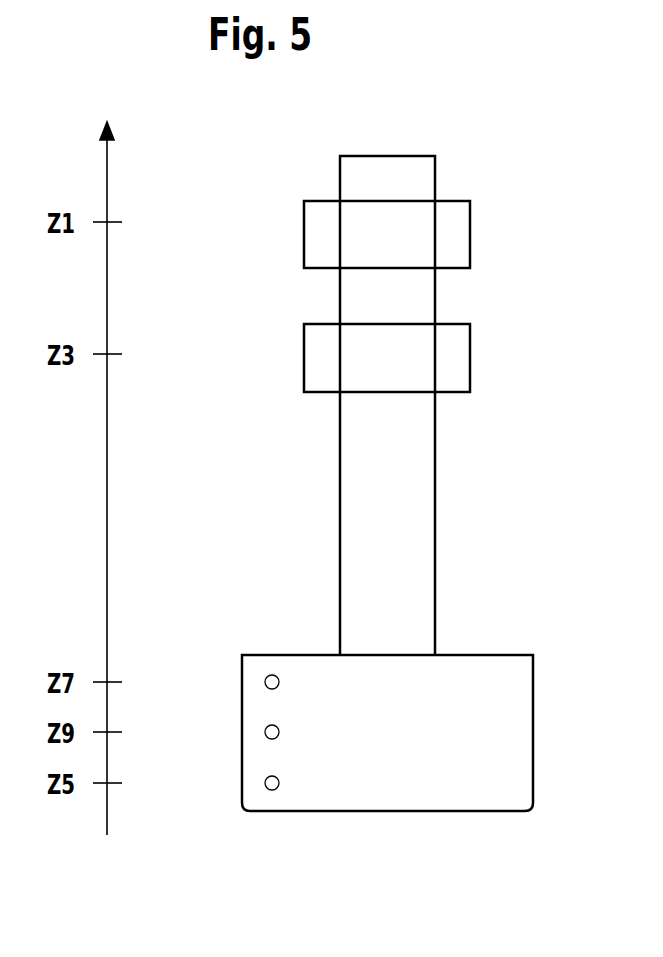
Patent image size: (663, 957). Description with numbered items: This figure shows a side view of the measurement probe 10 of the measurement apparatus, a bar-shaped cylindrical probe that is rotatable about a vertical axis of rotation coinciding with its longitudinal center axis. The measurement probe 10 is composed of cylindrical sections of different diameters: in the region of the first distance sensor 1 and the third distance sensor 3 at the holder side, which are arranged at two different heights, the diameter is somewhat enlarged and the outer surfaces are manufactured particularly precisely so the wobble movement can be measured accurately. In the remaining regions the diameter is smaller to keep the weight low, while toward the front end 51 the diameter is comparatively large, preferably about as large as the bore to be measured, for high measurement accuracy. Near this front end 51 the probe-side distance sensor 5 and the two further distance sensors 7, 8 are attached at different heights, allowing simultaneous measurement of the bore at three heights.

The first distance sensor at the holder side 1 is at (286, 222).
The third distance sensor at the holder side 3 is at (286, 354).
The distance sensor at the measurement probe side 5 is at (279, 783).
The further distance sensor at the measurement probe side 7 is at (279, 682).
The further distance sensor at the measurement probe side 8 is at (279, 732).
The measurement probe 10 is at (425, 175).
The front end of the measurement probe 51 is at (222, 822).